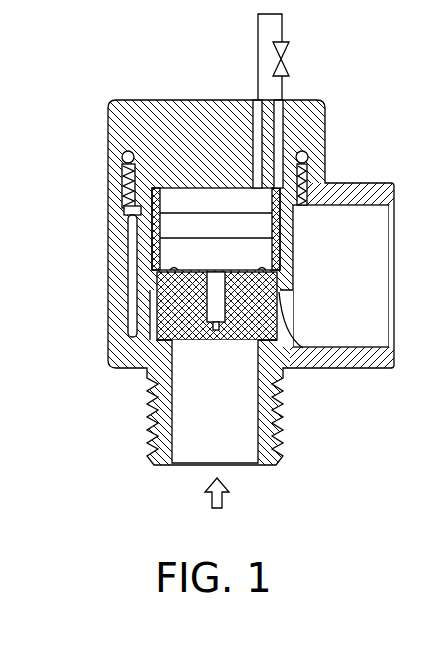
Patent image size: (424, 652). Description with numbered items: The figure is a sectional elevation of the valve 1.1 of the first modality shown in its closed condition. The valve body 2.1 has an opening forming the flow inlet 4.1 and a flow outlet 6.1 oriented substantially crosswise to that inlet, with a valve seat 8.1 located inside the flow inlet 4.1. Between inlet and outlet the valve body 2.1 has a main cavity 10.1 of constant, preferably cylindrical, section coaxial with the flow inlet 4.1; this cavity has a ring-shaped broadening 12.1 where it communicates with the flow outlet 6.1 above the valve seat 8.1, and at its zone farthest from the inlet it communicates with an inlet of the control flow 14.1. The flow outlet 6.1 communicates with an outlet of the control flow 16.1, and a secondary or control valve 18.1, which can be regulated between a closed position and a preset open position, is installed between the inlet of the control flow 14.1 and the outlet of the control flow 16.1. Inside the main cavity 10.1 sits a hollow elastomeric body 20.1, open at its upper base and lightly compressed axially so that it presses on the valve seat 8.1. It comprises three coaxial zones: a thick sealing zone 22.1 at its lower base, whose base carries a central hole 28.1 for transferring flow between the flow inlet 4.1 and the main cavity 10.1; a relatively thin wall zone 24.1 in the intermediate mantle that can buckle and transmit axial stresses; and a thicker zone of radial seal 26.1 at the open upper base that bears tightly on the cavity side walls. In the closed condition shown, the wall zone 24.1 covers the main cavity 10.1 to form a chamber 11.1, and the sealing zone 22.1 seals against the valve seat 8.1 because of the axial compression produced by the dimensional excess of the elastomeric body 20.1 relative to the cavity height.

The valve 1.1 is at (334, 129).
The valve body 2.1 is at (335, 175).
The flow inlet 4.1 is at (195, 450).
The flow outlet 6.1 is at (312, 265).
The valve seat 8.1 is at (160, 332).
The main cavity 10.1 is at (283, 272).
The chamber 11.1 is at (208, 208).
The ring-shaped broadening 12.1 is at (148, 313).
The inlet of the control flow 14.1 is at (262, 118).
The outlet of the control flow 16.1 is at (288, 120).
The secondary or control valve 18.1 is at (290, 57).
The elastomeric body 20.1 is at (135, 288).
The sealing zone 22.1 is at (248, 340).
The wall zone 24.1 is at (280, 262).
The zone of radial seal 26.1 is at (133, 203).
The central hole 28.1 is at (214, 340).